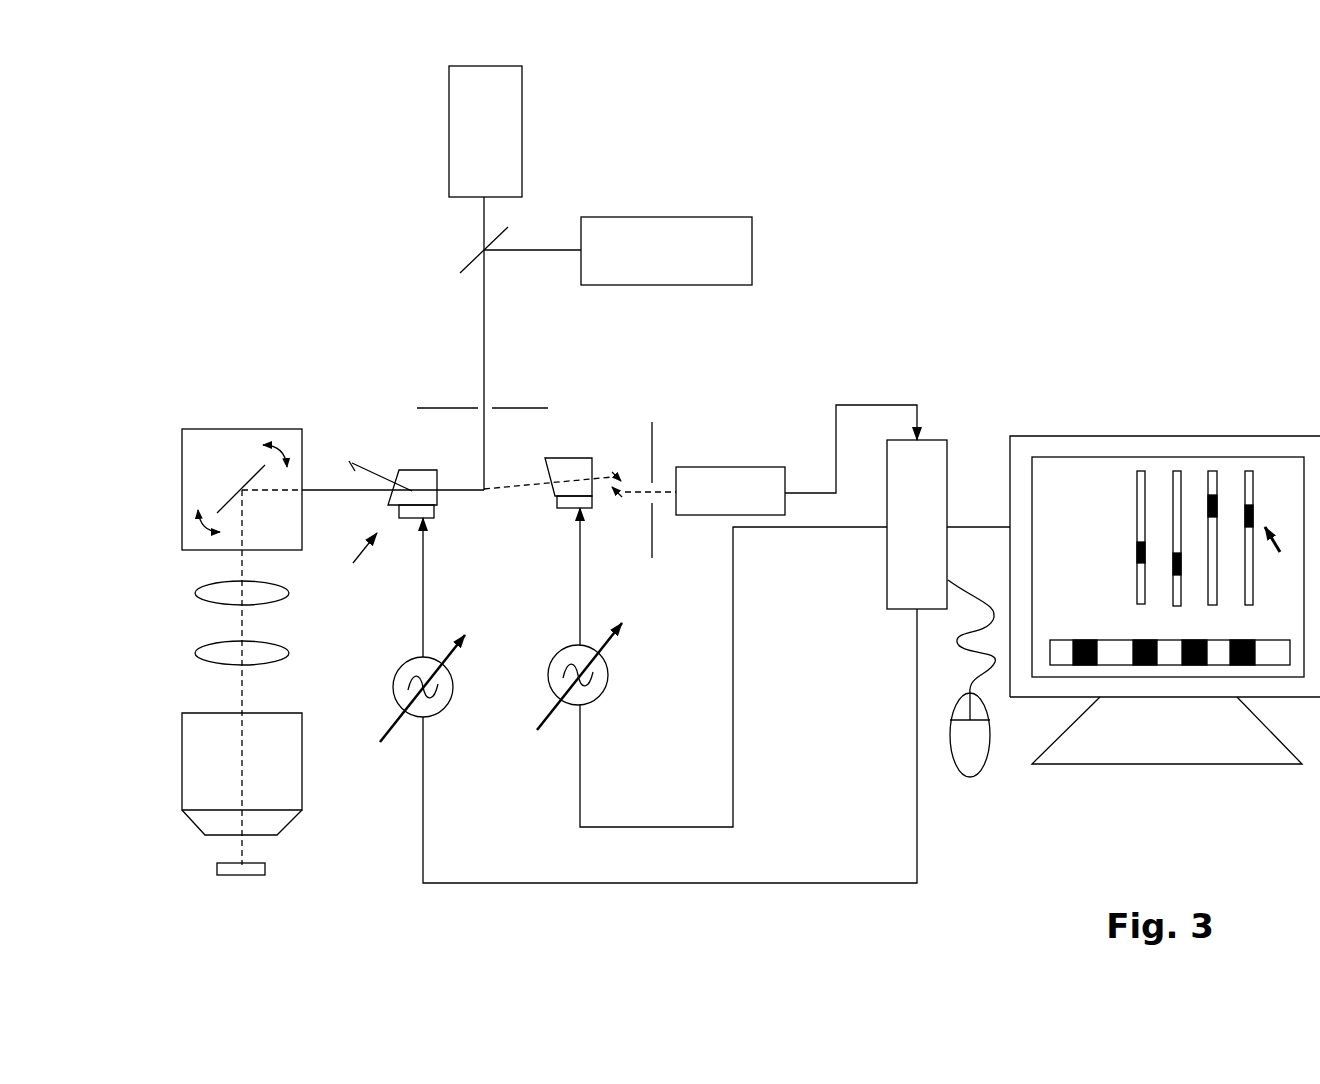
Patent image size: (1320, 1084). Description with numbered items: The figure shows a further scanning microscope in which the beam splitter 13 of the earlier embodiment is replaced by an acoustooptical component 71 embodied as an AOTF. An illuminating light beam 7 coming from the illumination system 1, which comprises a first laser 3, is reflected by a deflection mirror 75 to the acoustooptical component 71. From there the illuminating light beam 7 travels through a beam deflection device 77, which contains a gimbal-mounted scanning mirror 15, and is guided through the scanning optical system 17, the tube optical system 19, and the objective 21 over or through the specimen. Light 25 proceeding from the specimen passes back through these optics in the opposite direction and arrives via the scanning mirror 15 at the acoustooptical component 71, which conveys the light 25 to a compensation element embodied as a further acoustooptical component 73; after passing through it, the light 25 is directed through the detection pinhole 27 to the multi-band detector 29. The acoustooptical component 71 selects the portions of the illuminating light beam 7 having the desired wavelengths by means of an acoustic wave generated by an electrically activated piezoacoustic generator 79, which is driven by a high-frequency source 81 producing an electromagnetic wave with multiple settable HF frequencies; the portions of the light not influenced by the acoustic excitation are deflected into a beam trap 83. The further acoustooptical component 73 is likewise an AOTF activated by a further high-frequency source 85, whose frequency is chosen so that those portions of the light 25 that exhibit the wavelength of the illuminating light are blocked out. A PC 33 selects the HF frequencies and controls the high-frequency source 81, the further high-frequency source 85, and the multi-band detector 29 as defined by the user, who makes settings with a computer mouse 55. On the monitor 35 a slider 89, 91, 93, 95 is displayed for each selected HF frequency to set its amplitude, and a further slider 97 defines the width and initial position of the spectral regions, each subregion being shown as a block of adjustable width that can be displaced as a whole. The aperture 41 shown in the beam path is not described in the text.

The illumination system 1 is at (510, 108).
The first laser 3 is at (677, 260).
The illuminating light beam 7 is at (484, 375).
The beam splitter 13 is at (348, 569).
The scanning mirror 15 is at (230, 497).
The scanning optical system 17 is at (217, 593).
The tube optical system 19 is at (217, 655).
The objective 21 is at (205, 742).
The light proceeding from the specimen 25 is at (507, 480).
The detection pinhole 27 is at (652, 448).
The multi-band detector 29 is at (762, 475).
The PC 33 is at (928, 472).
The monitor 35 is at (1193, 450).
The aperture 41 is at (440, 410).
The computer mouse 55 is at (973, 758).
The acoustooptical component 71 is at (427, 498).
The further acoustooptical component 73 is at (567, 482).
The deflection mirror 75 is at (478, 498).
The beam deflection device 77 is at (206, 452).
The piezoacoustic generator 79 is at (417, 520).
The high-frequency source 81 is at (450, 680).
The beam trap 83 is at (352, 466).
The further high-frequency source 85 is at (607, 673).
The slider 89 is at (1140, 492).
The slider 91 is at (1177, 590).
The slider 93 is at (1209, 578).
The slider 95 is at (1250, 567).
The further slider 97 is at (1120, 653).